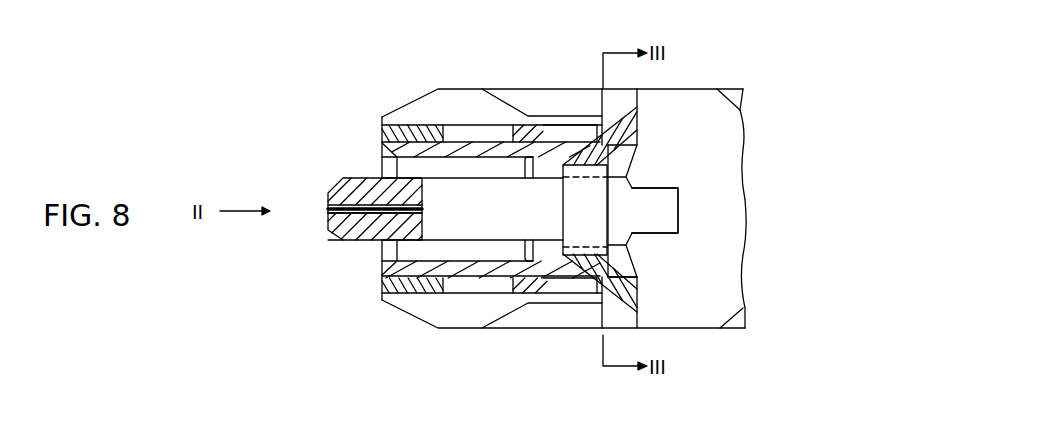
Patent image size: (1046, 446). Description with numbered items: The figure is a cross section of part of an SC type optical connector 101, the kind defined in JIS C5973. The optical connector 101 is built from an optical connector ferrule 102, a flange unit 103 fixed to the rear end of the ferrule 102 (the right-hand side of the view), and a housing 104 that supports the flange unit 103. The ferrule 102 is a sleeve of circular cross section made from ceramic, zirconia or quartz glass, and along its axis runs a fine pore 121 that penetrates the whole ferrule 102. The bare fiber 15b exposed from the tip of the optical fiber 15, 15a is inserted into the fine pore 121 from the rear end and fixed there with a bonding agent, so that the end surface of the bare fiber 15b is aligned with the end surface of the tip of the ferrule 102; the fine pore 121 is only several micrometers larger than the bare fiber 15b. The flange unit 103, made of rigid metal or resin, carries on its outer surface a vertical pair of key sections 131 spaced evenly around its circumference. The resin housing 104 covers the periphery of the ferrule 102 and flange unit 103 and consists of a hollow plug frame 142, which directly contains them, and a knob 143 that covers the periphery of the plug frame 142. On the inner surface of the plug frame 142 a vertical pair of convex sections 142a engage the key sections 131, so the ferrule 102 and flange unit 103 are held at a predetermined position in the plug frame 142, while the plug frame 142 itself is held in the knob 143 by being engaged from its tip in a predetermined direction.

The optical connector 101 is at (792, 59).
The optical connector ferrule 102 is at (354, 178).
The flange unit 103 is at (595, 227).
The housing 104 is at (780, 106).
The fine pore 121 is at (363, 242).
The key section 131 is at (582, 163).
The plug frame 142 is at (529, 117).
The convex section 142a is at (588, 232).
The knob 143 is at (717, 283).
The optical fiber 15 is at (673, 202).
The center conductor pin 15a is at (655, 210).
The bare fiber 15b is at (328, 203).